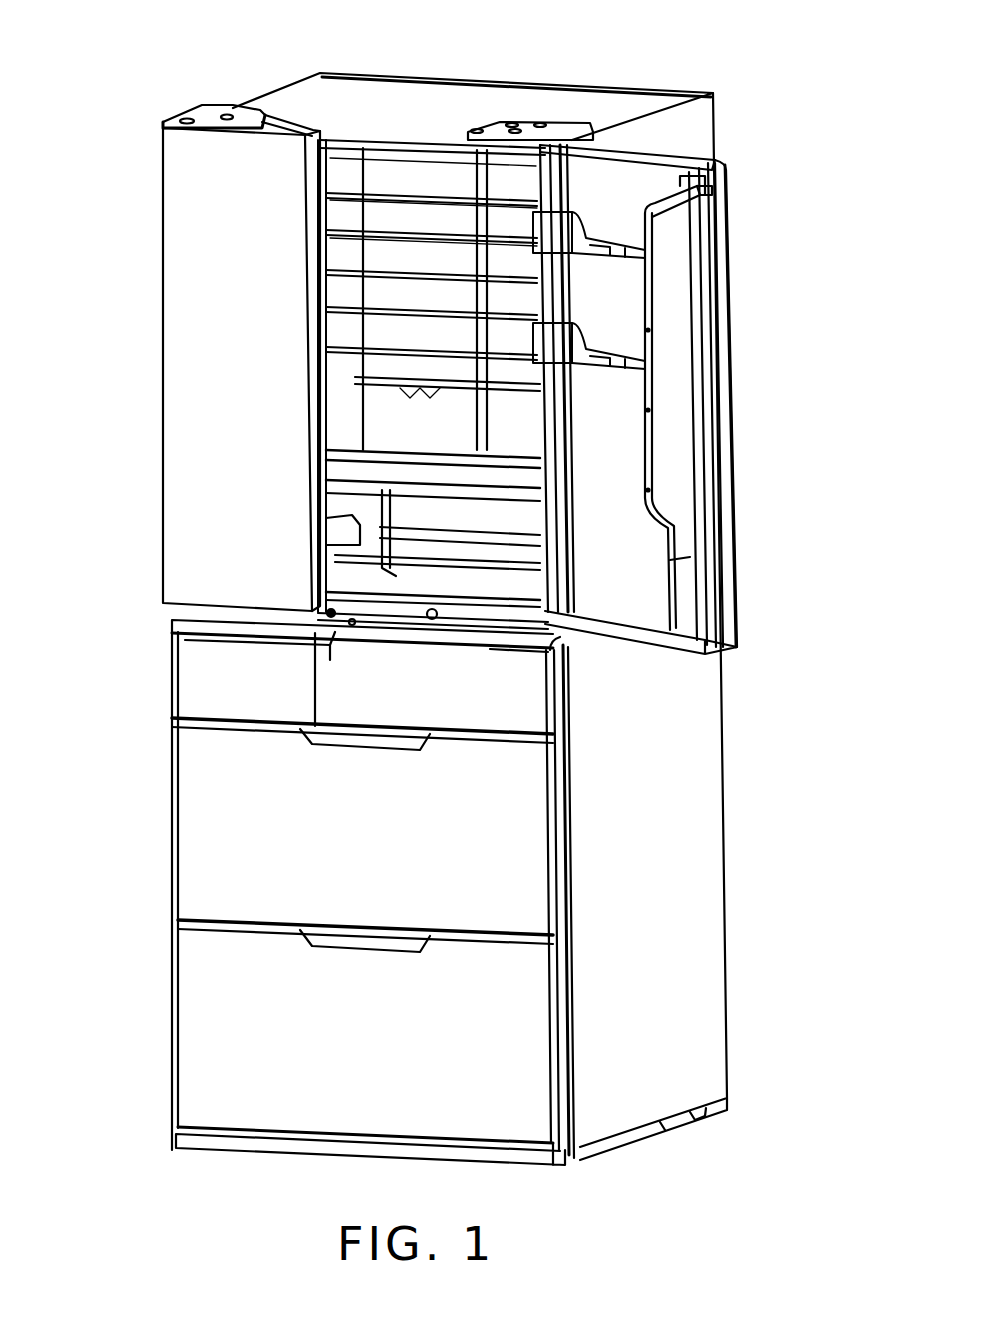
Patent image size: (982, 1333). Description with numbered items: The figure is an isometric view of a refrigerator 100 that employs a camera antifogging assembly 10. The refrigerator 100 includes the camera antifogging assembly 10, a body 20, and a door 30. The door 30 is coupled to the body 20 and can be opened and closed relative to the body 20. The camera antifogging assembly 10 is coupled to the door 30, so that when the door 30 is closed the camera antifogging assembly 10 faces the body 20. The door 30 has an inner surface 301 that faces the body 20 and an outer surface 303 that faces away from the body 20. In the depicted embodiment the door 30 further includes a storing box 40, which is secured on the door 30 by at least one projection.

The refrigerator 100 is at (240, 27).
The camera antifogging assembly 10 is at (672, 257).
The body 20 is at (620, 103).
The door 30 is at (675, 158).
The storing box 40 is at (620, 357).
The inner surface 301 is at (637, 547).
The outer surface 303 is at (197, 500).